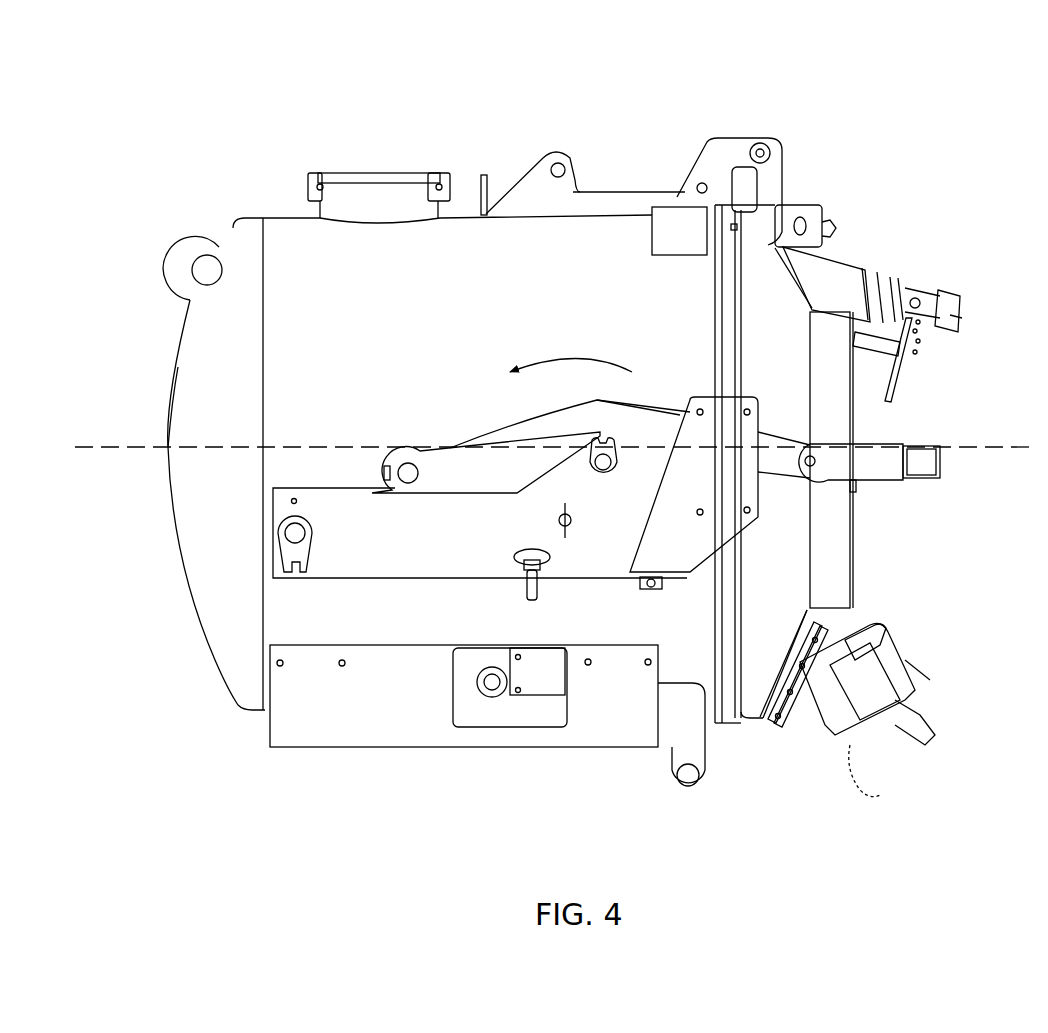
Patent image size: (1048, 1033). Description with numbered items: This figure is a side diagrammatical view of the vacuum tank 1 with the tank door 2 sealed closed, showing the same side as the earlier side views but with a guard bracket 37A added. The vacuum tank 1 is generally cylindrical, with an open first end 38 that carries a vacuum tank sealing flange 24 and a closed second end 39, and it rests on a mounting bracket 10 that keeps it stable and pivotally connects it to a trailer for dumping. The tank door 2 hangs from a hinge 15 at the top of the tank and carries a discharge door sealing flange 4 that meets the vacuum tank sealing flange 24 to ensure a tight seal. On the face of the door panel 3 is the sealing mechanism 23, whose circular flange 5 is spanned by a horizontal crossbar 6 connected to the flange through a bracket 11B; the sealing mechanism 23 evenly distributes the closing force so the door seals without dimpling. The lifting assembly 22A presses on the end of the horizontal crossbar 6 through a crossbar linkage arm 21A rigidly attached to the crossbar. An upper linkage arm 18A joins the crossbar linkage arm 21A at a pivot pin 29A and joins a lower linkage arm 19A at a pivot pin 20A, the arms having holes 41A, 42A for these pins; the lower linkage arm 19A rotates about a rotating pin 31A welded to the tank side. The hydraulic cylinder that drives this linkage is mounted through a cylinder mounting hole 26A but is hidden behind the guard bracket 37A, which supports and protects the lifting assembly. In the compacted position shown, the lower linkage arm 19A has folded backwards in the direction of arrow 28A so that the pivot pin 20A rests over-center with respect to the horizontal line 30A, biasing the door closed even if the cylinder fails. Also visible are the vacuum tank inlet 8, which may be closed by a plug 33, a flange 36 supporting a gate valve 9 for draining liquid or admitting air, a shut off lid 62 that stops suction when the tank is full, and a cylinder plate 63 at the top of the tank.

The vacuum tank 1 is at (485, 431).
The tank door 2 is at (919, 161).
The door panel 3 is at (897, 660).
The discharge door sealing flange 4 is at (786, 442).
The circular flange 5 is at (902, 476).
The horizontal crossbar 6 is at (961, 439).
The vacuum tank inlet 8 is at (854, 280).
The gate valve 9 is at (867, 726).
The mounting bracket 10 is at (449, 725).
The bracket 11B is at (931, 531).
The hinge 15 is at (746, 169).
The upper linkage arm 18A is at (599, 618).
The lower linkage arm 19A is at (511, 604).
The pivot pin 20A is at (243, 500).
The crossbar linkage arm 21A is at (831, 472).
The lifting assembly 22A is at (267, 293).
The sealing mechanism 23 is at (960, 360).
The vacuum tank sealing flange 24 is at (692, 760).
The cylinder mounting hole 26A is at (386, 549).
The arrow 28A is at (571, 350).
The pivot pin 29A is at (911, 477).
The horizontal line 30A is at (544, 423).
The rotating pin 31A is at (551, 622).
The plug 33 is at (970, 301).
The flange 36 is at (817, 736).
The guard bracket 37A is at (383, 600).
The first end 38 is at (650, 197).
The second end 39 is at (177, 378).
The hole 41A is at (236, 518).
The hole 42A is at (914, 499).
The shut off lid 62 is at (370, 171).
The cylinder plate 63 is at (515, 170).